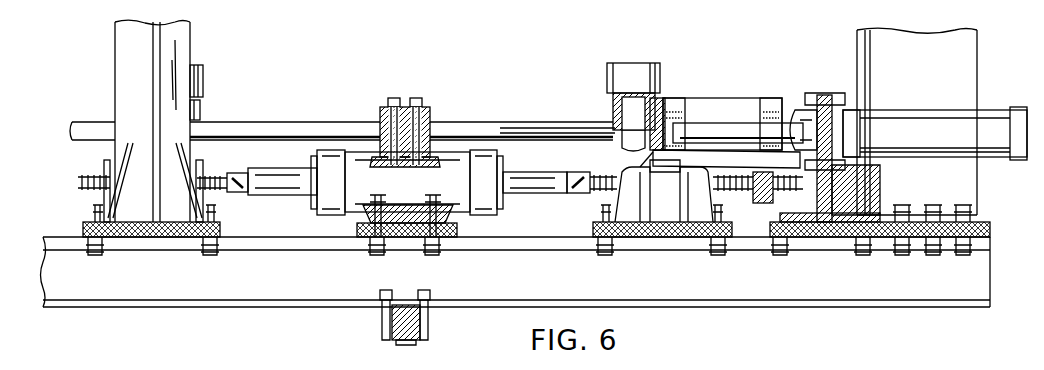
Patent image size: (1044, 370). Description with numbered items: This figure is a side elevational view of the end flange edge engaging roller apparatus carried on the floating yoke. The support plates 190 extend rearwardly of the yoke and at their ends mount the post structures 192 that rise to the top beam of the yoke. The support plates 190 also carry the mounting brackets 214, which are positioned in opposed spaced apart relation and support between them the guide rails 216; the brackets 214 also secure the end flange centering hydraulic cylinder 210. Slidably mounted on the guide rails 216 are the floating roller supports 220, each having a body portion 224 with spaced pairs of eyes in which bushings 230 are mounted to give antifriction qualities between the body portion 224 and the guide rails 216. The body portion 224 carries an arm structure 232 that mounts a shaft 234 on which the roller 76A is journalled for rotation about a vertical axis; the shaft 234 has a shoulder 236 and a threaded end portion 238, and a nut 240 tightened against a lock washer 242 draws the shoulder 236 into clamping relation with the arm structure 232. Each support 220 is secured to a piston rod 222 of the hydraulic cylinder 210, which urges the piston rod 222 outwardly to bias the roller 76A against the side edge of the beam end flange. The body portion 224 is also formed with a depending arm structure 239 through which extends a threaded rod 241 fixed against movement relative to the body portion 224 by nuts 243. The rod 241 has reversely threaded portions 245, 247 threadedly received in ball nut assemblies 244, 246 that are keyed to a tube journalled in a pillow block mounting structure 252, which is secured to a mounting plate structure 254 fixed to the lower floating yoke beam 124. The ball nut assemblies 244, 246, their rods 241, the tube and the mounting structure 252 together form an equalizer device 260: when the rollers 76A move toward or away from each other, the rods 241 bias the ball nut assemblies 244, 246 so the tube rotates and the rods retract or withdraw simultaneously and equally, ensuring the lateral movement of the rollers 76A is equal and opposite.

The lower floating yoke beam 124 is at (250, 290).
The support plates 190 is at (882, 237).
The post structures 192 is at (182, 45).
The rollers 76A is at (203, 80).
The guide rails 216 is at (358, 118).
The equalizer device 260 is at (453, 147).
The pillow block mounting structure 252 is at (343, 216).
The mounting plate structure 254 is at (460, 237).
The ball nut assembly 246 is at (237, 195).
The reversely threaded portion 247 is at (213, 178).
The ball nut assembly 244 is at (572, 194).
The lock washer 242 is at (625, 192).
The reversely threaded portion 245 is at (620, 170).
The threaded shaft or rod 241 is at (695, 232).
The nuts 243 is at (738, 192).
The depending arm structure 239 is at (762, 203).
The threaded end portion 238 is at (653, 155).
The nut 240 is at (612, 122).
The shafts 234 is at (615, 108).
The shoulder 236 is at (645, 40).
The arm structure 232 is at (660, 98).
The body portion 224 is at (712, 98).
The bushings 230 is at (680, 108).
The floating roller supports 220 is at (740, 110).
The piston rod 222 is at (825, 93).
The mounting brackets 214 is at (870, 195).
The end flange centering hydraulic cylinder 210 is at (960, 120).